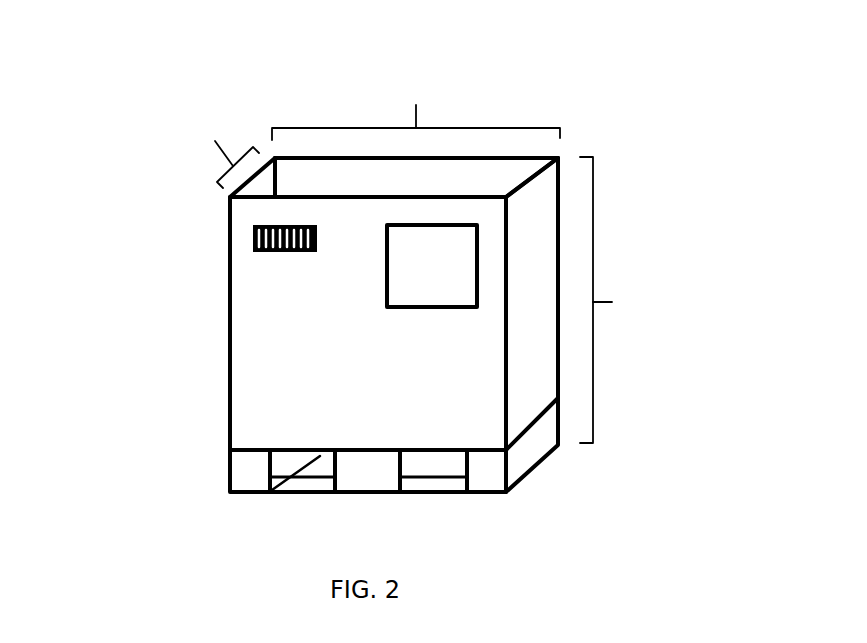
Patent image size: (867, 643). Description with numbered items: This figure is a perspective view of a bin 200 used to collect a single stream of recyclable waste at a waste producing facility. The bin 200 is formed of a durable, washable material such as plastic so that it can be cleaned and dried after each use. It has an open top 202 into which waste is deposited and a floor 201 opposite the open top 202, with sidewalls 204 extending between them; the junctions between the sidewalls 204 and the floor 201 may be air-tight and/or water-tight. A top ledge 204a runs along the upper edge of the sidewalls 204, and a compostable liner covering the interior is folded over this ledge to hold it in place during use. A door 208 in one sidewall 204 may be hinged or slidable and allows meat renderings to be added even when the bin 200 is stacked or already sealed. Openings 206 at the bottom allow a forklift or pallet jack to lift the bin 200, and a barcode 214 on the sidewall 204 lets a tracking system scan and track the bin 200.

The bin 200 is at (156, 216).
The floor 201 is at (322, 455).
The open top 202 is at (487, 177).
The sidewalls 204 is at (310, 314).
The top ledge 204a is at (445, 158).
The openings 206 is at (435, 467).
The door 208 is at (450, 265).
The barcode 214 is at (252, 243).